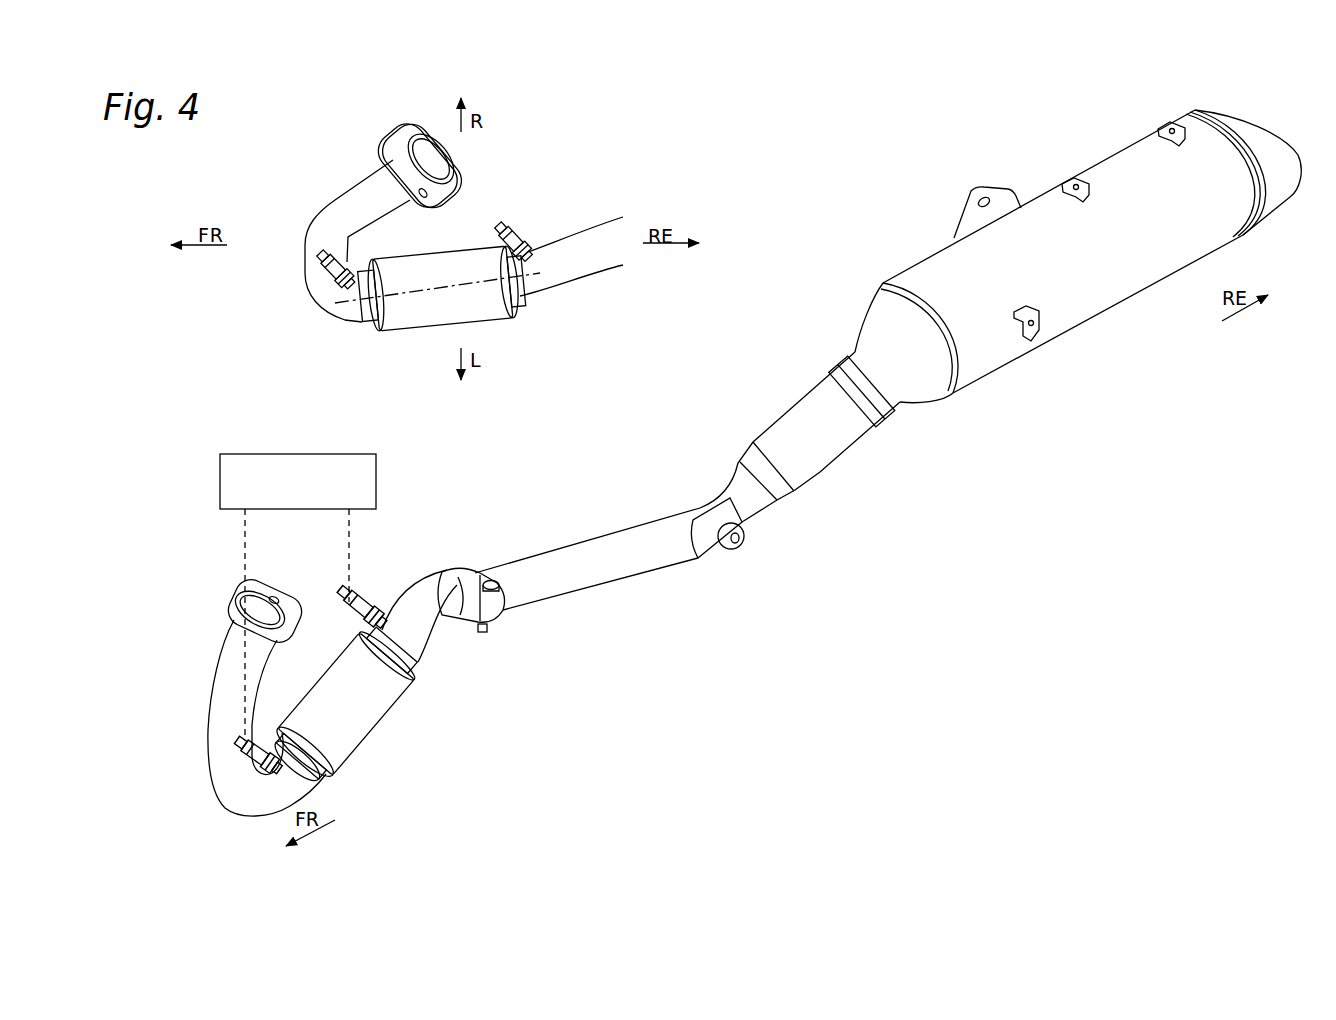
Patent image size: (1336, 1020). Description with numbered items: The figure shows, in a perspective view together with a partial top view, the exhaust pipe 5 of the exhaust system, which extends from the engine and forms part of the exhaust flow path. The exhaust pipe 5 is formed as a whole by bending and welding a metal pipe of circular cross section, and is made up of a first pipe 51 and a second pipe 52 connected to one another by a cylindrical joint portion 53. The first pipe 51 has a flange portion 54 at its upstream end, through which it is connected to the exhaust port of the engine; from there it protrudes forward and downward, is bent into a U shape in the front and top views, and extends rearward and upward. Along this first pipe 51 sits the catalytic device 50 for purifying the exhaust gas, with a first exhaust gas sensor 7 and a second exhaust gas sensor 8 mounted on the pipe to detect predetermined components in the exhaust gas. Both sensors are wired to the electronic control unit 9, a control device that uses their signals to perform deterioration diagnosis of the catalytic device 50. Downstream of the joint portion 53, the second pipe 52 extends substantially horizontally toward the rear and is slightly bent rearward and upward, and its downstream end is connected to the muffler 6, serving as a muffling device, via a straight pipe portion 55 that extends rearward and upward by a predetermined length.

The exhaust pipe 5 is at (722, 688).
The muffler 6 is at (1114, 302).
The first exhaust gas sensor 7 is at (320, 252).
The second exhaust gas sensor 8 is at (499, 224).
The electronic control unit 9 is at (273, 454).
The catalytic device 50 is at (408, 328).
The first pipe 51 is at (333, 197).
The second pipe 52 is at (627, 573).
The joint portion 53 is at (505, 612).
The flange portion 54 is at (398, 137).
The straight pipe portion 55 is at (832, 453).